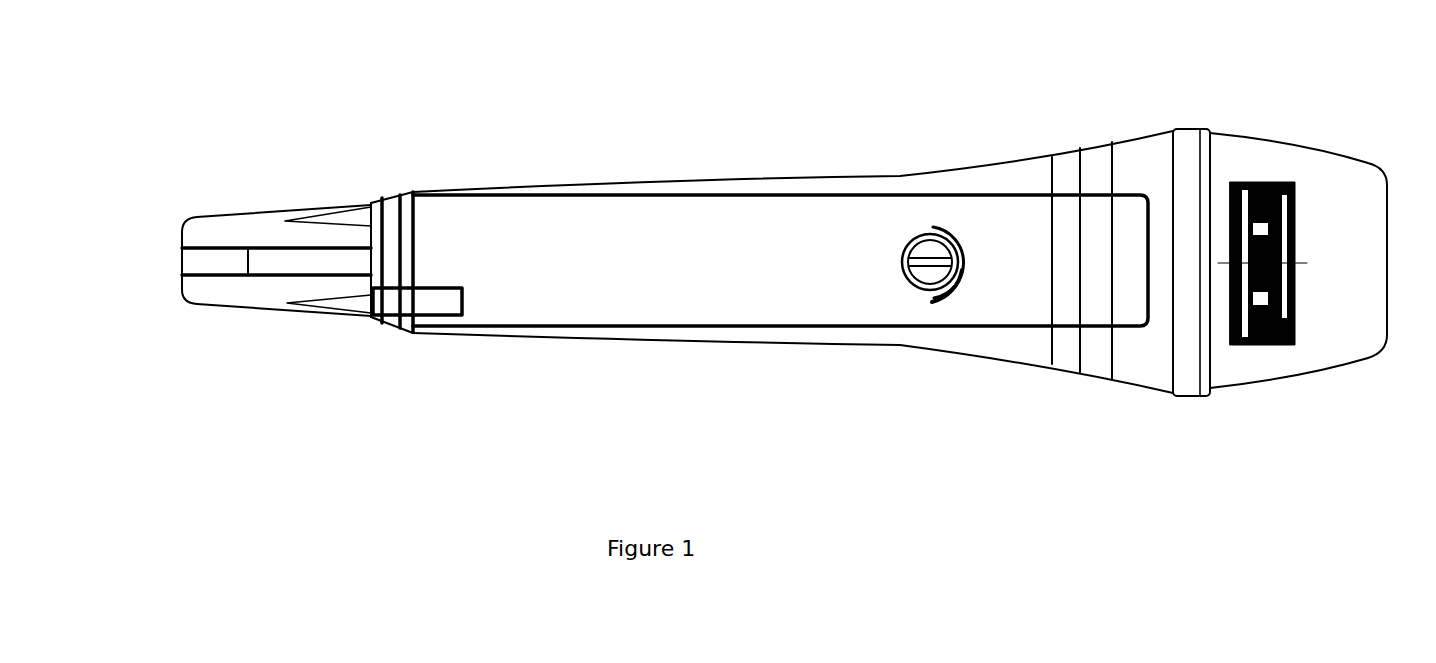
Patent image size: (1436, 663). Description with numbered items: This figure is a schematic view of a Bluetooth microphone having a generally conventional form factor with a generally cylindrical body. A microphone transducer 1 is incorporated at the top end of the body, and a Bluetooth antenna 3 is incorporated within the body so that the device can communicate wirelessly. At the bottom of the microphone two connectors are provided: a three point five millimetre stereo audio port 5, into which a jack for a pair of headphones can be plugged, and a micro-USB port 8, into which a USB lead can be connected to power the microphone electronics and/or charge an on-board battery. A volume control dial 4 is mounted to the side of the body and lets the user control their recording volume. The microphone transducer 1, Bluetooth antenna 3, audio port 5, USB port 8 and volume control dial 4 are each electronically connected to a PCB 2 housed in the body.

The microphone transducer 1 is at (1258, 353).
The PCB 2 is at (722, 267).
The Bluetooth antenna 3 is at (292, 260).
The volume control dial 4 is at (913, 237).
The 3.5 mm stereo audio port 5 is at (433, 305).
The micro-USB port 8 is at (180, 250).